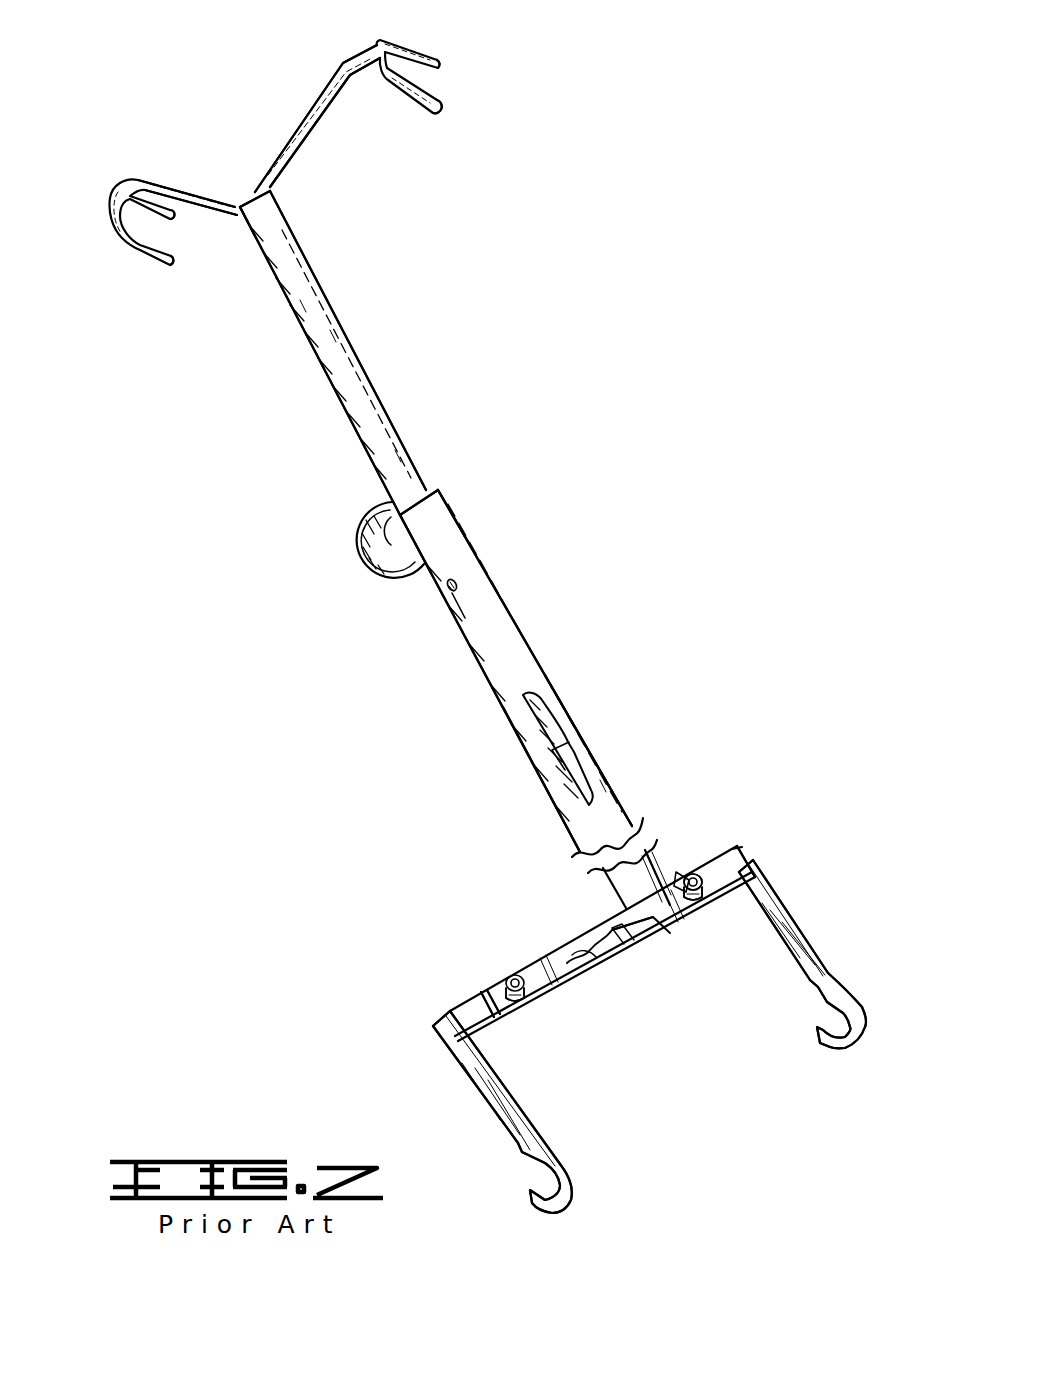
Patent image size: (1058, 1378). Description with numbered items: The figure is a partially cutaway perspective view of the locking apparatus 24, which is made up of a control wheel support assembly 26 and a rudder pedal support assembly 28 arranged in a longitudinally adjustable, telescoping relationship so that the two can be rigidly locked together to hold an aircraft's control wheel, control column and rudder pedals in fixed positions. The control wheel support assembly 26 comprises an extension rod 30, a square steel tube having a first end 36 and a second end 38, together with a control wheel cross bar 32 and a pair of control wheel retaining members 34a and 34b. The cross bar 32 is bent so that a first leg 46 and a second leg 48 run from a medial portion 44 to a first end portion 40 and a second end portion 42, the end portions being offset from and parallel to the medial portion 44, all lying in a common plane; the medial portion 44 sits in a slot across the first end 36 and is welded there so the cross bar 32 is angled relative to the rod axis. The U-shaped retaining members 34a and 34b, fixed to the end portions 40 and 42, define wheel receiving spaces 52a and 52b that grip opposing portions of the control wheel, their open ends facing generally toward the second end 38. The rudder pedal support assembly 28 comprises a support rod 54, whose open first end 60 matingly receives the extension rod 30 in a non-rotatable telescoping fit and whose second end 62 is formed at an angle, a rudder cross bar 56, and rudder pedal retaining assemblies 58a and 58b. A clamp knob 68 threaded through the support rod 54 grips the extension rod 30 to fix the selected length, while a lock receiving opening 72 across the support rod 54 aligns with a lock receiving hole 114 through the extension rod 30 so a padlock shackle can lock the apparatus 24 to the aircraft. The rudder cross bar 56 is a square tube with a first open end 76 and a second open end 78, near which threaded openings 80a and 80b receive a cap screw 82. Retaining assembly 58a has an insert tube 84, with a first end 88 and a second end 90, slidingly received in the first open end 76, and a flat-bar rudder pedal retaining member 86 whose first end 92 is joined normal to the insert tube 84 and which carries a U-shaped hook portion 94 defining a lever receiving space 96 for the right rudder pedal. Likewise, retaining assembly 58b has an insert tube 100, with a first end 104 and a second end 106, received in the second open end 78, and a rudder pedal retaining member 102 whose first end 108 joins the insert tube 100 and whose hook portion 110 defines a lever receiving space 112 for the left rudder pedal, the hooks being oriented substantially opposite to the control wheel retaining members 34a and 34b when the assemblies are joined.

The locking apparatus 24 is at (613, 244).
The control wheel support assembly 26 is at (383, 385).
The rudder pedal support assembly 28 is at (606, 771).
The extension rod 30 is at (313, 284).
The control wheel cross bar 32 is at (305, 118).
The control wheel retaining member 34a is at (125, 240).
The control wheel retaining member 34b is at (407, 100).
The first end 36 is at (230, 197).
The second end 38 is at (552, 755).
The first end portion 40 is at (138, 182).
The second end portion 42 is at (375, 50).
The medial portion 44 is at (236, 213).
The first leg 46 is at (187, 182).
The second leg 48 is at (340, 80).
The wheel receiving space 52a is at (174, 240).
The wheel receiving space 52b is at (432, 83).
The support rod 54 is at (530, 642).
The rudder cross bar 56 is at (592, 940).
The rudder pedal retaining assembly 58a is at (470, 1075).
The rudder pedal retaining assembly 58b is at (798, 913).
The first end 60 is at (440, 500).
The second end 62 is at (640, 877).
The clamp knob 68 is at (358, 530).
The lock receiving opening 72 is at (462, 605).
The first open end 76 is at (490, 985).
The second open end 78 is at (684, 870).
The threaded opening 80a is at (515, 1002).
The threaded opening 80b is at (700, 893).
The cap screw 82 is at (684, 893).
The insert tube 84 is at (488, 1000).
The rudder pedal retaining member 86 is at (535, 1115).
The first end 88 is at (485, 1013).
The second end 90 is at (605, 968).
The first end 92 is at (440, 1028).
The hook portion 94 is at (572, 1188).
The lever receiving space 96 is at (530, 1180).
The insert tube 100 is at (698, 870).
The rudder pedal retaining member 102 is at (822, 953).
The first end 104 is at (755, 868).
The second end 106 is at (630, 962).
The first end 108 is at (740, 850).
The hook portion 110 is at (862, 1010).
The lever receiving space 112 is at (824, 1010).
The lock receiving hole 114 is at (448, 588).